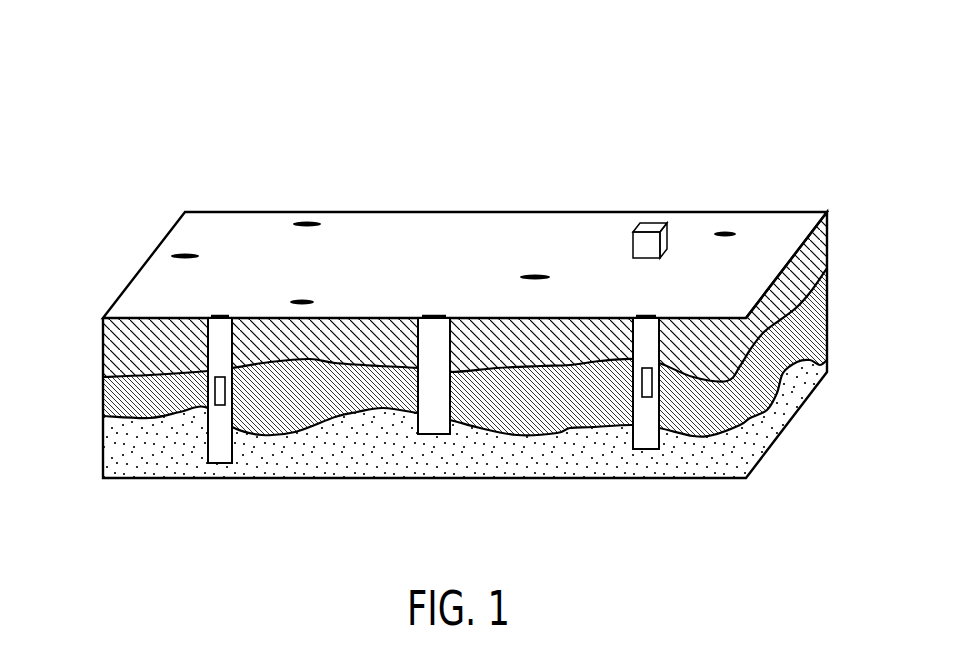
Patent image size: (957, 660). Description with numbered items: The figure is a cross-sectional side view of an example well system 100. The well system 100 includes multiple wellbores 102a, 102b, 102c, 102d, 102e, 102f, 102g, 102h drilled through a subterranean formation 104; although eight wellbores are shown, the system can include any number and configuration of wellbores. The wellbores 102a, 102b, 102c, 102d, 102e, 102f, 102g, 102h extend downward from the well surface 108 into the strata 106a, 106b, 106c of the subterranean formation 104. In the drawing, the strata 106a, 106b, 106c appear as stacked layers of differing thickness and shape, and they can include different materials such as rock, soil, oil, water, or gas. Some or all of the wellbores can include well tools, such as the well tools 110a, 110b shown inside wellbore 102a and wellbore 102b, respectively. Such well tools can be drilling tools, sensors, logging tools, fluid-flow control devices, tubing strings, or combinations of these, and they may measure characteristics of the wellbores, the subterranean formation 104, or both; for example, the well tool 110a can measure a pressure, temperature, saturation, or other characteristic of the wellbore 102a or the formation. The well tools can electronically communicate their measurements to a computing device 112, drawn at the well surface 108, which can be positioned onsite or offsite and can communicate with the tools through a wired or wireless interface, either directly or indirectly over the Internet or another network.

The well system 100 is at (210, 86).
The wellbore 102a is at (222, 463).
The wellbore 102b is at (648, 449).
The wellbore 102c is at (435, 434).
The wellbore 102d is at (308, 221).
The wellbore 102e is at (185, 253).
The wellbore 102f is at (300, 299).
The wellbore 102g is at (536, 274).
The wellbore 102h is at (729, 232).
The subterranean formation 104 is at (88, 381).
The stratum 106a is at (828, 246).
The stratum 106b is at (828, 317).
The stratum 106c is at (828, 363).
The well surface 108 is at (464, 228).
The well tool 110a is at (215, 392).
The well tool 110b is at (653, 388).
The computing device 112 is at (650, 228).